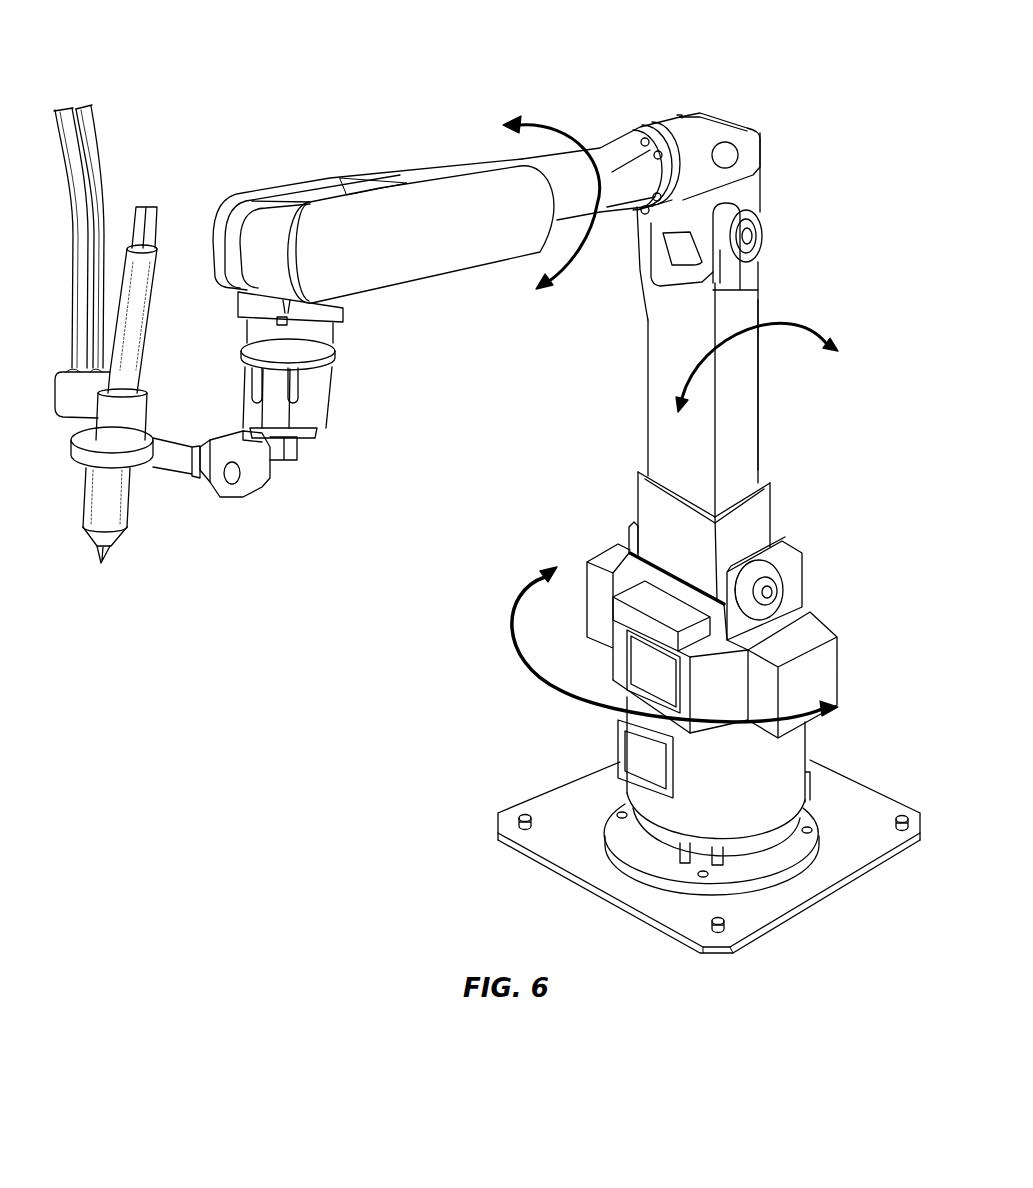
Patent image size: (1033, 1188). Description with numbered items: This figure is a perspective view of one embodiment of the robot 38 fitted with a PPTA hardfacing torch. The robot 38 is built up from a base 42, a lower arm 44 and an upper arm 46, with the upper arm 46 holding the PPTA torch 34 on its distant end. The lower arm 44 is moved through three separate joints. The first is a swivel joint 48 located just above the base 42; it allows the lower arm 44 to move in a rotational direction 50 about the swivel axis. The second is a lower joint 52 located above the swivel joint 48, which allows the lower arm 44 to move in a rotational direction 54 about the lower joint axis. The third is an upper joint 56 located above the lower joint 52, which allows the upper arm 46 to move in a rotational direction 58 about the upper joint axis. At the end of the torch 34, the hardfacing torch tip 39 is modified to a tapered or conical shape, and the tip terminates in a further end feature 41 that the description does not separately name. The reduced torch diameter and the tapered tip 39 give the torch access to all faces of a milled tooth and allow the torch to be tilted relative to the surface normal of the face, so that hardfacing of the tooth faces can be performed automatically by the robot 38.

The robot 38 is at (703, 72).
The rotational direction 58 is at (546, 126).
The upper joint 56 is at (749, 234).
The rotational direction 54 is at (795, 322).
The lower arm 44 is at (755, 417).
The upper arm 46 is at (447, 244).
The lower joint 52 is at (770, 594).
The rotational direction 50 is at (513, 603).
The swivel joint 48 is at (736, 708).
The base 42 is at (586, 838).
The PPTA torch 34 is at (108, 492).
The hardfacing torch tip 39 is at (106, 538).
The needle 41 is at (106, 548).